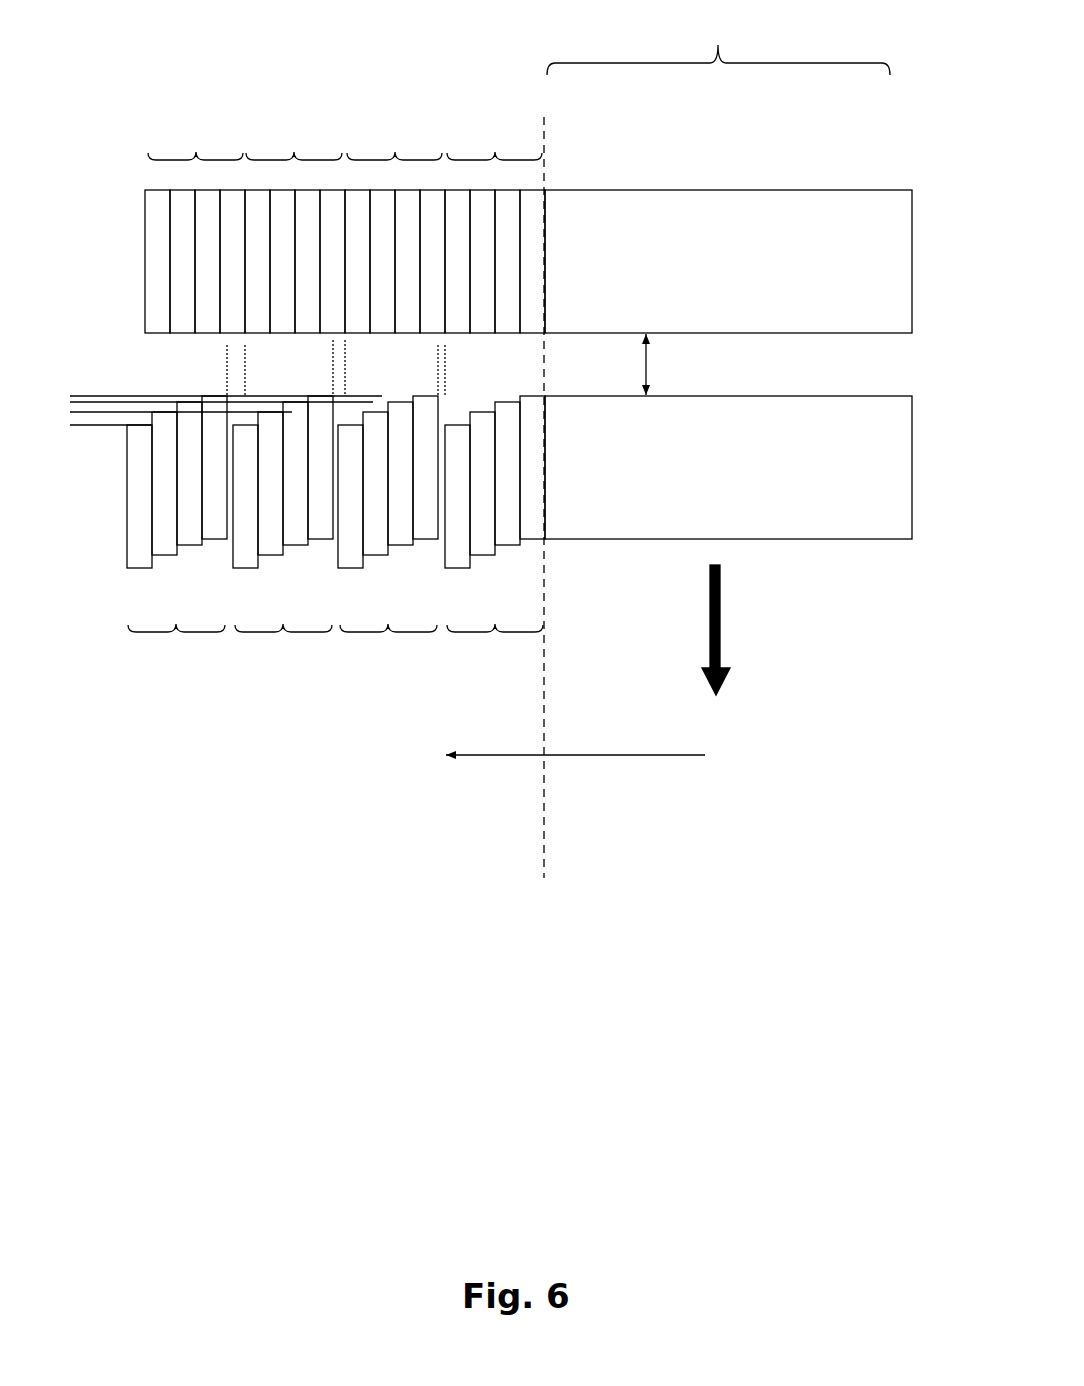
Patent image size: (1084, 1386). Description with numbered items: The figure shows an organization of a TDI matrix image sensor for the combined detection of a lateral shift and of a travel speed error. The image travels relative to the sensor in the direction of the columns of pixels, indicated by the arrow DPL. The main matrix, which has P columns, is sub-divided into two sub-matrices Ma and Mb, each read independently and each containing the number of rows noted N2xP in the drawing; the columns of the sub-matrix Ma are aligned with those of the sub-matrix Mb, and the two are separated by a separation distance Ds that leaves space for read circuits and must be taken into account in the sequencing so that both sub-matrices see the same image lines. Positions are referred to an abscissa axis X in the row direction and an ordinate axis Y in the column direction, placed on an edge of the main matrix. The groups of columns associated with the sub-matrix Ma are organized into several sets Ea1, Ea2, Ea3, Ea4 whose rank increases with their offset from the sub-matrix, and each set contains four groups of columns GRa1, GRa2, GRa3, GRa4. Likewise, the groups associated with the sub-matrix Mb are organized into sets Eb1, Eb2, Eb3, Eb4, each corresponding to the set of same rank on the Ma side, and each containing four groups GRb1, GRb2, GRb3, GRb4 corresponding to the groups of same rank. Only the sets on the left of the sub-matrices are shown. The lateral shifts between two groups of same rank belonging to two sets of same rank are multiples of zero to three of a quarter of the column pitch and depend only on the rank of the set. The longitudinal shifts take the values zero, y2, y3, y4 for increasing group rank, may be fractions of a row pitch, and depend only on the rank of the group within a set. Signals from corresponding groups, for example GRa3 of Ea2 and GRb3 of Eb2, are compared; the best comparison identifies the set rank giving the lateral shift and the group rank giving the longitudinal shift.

The columns of the main matrix P is at (718, 44).
The ordinate axis Y is at (551, 491).
The abscissa axis X is at (575, 738).
The sub-matrix Ma is at (728, 261).
The sub-matrix Mb is at (728, 467).
The sub-matrix dimensions N2xP is at (706, 368).
The separation distance Ds is at (665, 364).
The relative direction of movement DPL is at (683, 631).
The set of groups of columns Ea4 is at (195, 139).
The set of groups of columns Ea3 is at (294, 139).
The set of groups of columns Ea2 is at (394, 140).
The set of groups of columns Ea1 is at (494, 140).
The set of groups of columns Eb4 is at (176, 647).
The set of groups of columns Eb3 is at (283, 647).
The set of groups of columns Eb2 is at (388, 647).
The set of groups of columns Eb1 is at (495, 646).
The group of columns GRa4 is at (307, 261).
The group of columns GRa3 is at (332, 261).
The group of columns GRa2 is at (357, 261).
The group of columns GRa1 is at (382, 261).
The group of columns GRb4 is at (298, 496).
The group of columns GRb3 is at (323, 483).
The group of columns GRb2 is at (348, 473).
The group of columns GRb1 is at (373, 467).
The longitudinal shift y4 is at (78, 447).
The longitudinal shift y3 is at (103, 438).
The longitudinal shift y2 is at (130, 427).